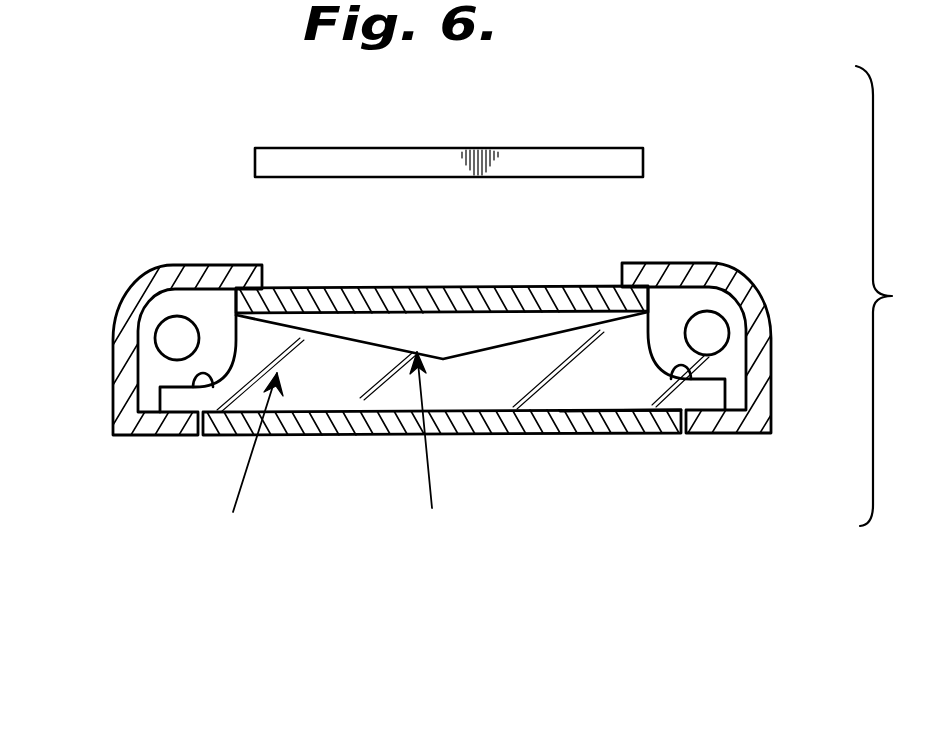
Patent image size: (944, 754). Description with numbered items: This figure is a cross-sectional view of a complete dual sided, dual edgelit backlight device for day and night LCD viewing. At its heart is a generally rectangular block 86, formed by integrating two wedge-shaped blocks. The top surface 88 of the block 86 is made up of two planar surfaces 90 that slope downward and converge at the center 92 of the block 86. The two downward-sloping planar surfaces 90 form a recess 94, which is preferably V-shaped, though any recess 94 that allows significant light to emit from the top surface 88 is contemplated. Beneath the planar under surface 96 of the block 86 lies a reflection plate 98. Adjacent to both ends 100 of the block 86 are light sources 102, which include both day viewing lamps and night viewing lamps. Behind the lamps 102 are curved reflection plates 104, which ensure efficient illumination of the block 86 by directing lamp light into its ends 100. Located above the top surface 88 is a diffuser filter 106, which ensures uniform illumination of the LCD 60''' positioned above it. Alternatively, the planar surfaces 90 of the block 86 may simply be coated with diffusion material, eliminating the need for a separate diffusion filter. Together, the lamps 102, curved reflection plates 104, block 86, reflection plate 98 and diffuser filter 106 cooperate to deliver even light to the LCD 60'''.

The LCD 60''' is at (467, 102).
The block 86 is at (248, 462).
The top surface 88 is at (432, 448).
The planar surfaces 90 is at (358, 332).
The center 92 is at (443, 357).
The recess 94 is at (480, 330).
The planar under surface 96 is at (603, 410).
The reflection plate 98 is at (327, 422).
The ends 100 is at (196, 375).
The light sources 102 is at (167, 336).
The curved reflection plates 104 is at (188, 277).
The diffuser filter 106 is at (293, 288).